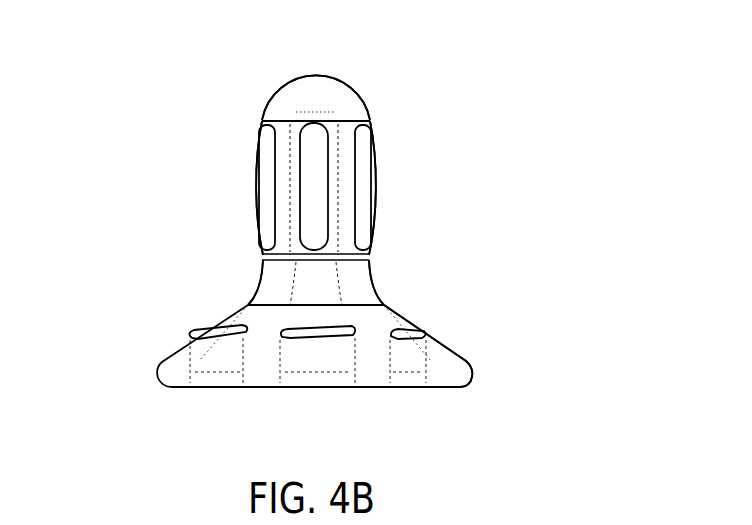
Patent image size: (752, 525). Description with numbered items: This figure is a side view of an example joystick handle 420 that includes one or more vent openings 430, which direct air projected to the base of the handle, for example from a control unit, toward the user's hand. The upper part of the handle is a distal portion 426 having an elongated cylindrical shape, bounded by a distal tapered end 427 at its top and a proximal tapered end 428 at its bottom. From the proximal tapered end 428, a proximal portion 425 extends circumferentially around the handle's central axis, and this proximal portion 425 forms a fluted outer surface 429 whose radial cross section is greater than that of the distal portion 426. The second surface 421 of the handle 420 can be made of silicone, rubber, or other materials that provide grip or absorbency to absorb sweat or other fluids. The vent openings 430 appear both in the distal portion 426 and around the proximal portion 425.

The joystick handle 420 is at (100, 68).
The second surface 421 is at (292, 100).
The distal tapered end 427 is at (342, 102).
The distal portion 426 is at (402, 82).
The proximal tapered end 428 is at (352, 277).
The fluted outer surface 429 is at (467, 360).
The proximal portion 425 is at (517, 303).
The vent openings 430 is at (318, 192).